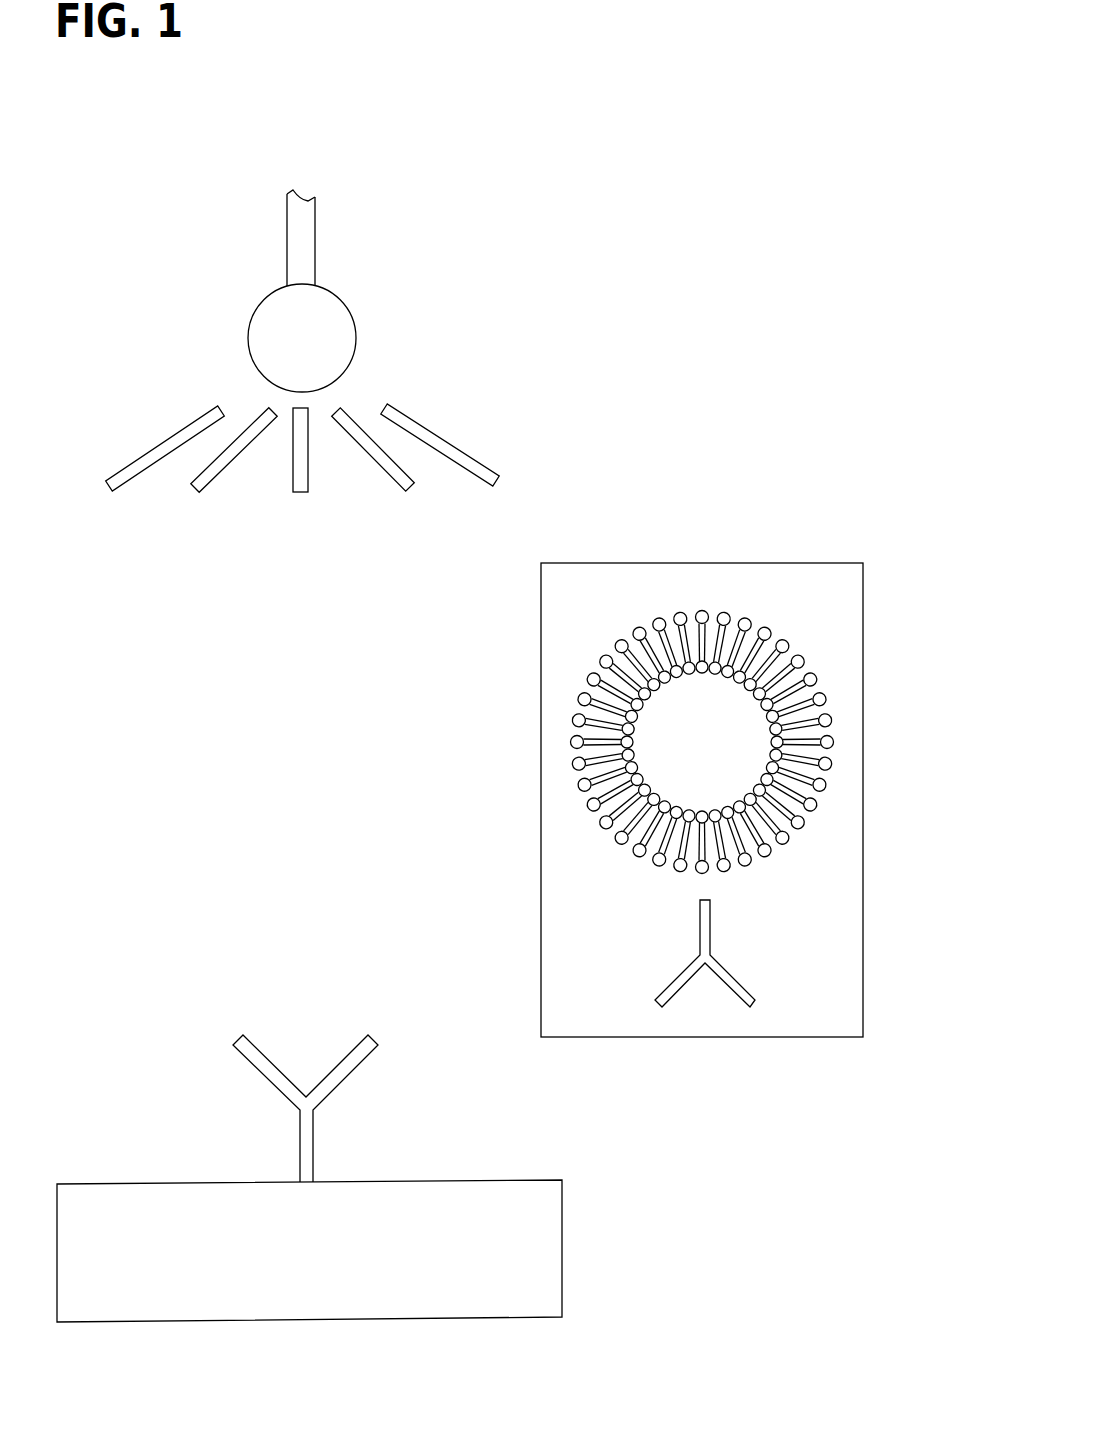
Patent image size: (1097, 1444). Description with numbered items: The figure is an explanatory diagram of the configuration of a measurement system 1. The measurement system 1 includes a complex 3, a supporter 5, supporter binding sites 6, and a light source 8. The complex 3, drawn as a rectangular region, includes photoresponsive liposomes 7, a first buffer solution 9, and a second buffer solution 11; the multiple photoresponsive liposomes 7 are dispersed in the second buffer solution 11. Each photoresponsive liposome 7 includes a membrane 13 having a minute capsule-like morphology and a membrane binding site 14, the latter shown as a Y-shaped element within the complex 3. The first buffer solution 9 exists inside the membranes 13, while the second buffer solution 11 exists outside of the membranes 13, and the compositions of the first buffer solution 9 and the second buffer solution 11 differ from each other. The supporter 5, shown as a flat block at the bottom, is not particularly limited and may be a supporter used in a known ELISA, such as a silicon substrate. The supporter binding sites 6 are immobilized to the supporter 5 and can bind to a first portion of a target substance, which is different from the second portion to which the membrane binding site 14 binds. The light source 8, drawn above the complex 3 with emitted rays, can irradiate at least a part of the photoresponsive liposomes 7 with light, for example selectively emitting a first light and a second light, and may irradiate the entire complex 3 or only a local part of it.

The measurement system 1 is at (718, 140).
The complex 3 is at (803, 568).
The supporter 5 is at (562, 1253).
The supporter binding site 6 is at (345, 1077).
The photoresponsive liposome 7 is at (913, 850).
The light source 8 is at (350, 313).
The first buffer solution 9 is at (691, 747).
The second buffer solution 11 is at (627, 605).
The membrane 13 is at (788, 830).
The membrane binding site 14 is at (710, 940).